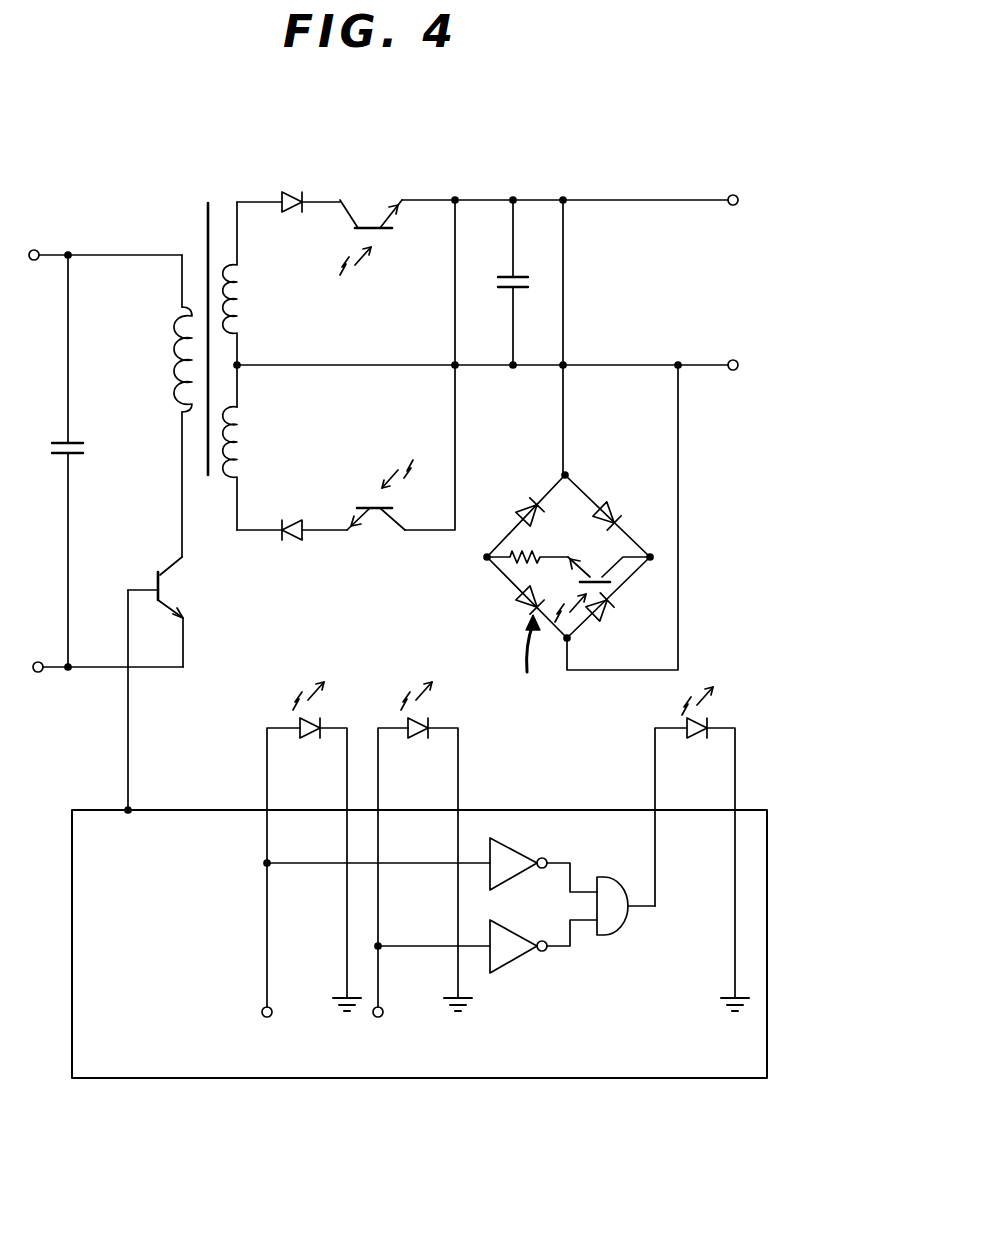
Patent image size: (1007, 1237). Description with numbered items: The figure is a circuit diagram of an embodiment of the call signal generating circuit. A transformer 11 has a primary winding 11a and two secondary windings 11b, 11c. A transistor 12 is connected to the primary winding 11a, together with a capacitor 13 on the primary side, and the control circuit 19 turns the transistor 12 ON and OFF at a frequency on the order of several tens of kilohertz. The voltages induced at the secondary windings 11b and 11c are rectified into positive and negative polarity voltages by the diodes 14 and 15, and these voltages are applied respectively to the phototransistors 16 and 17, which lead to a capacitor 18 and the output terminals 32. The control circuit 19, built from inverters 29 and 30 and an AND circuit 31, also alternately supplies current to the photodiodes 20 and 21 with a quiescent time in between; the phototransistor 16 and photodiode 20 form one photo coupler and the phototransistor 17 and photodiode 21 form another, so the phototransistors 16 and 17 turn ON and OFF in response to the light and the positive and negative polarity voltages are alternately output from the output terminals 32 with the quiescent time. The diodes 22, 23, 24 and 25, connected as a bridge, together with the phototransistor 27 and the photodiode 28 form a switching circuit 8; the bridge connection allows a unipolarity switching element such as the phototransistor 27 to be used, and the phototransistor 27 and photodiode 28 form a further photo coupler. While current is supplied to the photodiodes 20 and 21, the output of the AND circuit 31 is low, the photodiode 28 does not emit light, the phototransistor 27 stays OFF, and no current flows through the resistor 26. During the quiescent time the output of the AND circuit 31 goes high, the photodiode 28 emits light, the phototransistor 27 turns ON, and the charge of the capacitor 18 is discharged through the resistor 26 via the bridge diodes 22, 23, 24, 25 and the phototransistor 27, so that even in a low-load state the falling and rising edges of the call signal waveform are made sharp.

The switching circuit 8 is at (535, 653).
The transformer 11 is at (208, 198).
The primary winding 11a is at (172, 366).
The secondary winding 11b is at (244, 288).
The secondary winding 11c is at (243, 450).
The transistor 12 is at (153, 575).
The capacitor 13 is at (78, 458).
The diode 14 is at (292, 192).
The diode 15 is at (293, 537).
The phototransistor 16 is at (375, 212).
The phototransistor 17 is at (375, 510).
The capacitor 18 is at (496, 282).
The control circuit 19 is at (162, 808).
The photodiode 20 is at (308, 740).
The photodiode 21 is at (415, 740).
The diode 22 is at (532, 503).
The diode 23 is at (613, 507).
The diode 24 is at (522, 610).
The diode 25 is at (602, 618).
The resistor 26 is at (537, 556).
The phototransistor 27 is at (596, 578).
The photodiode 28 is at (697, 738).
The inverter 29 is at (513, 847).
The inverter 30 is at (517, 962).
The AND circuit 31 is at (622, 927).
The output terminals 32 is at (735, 206).